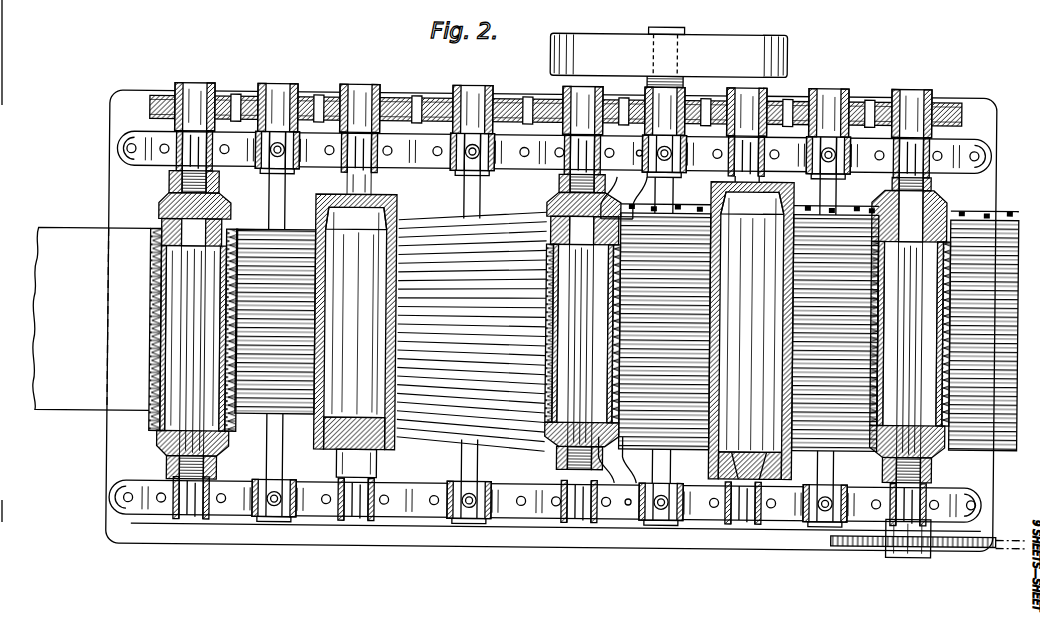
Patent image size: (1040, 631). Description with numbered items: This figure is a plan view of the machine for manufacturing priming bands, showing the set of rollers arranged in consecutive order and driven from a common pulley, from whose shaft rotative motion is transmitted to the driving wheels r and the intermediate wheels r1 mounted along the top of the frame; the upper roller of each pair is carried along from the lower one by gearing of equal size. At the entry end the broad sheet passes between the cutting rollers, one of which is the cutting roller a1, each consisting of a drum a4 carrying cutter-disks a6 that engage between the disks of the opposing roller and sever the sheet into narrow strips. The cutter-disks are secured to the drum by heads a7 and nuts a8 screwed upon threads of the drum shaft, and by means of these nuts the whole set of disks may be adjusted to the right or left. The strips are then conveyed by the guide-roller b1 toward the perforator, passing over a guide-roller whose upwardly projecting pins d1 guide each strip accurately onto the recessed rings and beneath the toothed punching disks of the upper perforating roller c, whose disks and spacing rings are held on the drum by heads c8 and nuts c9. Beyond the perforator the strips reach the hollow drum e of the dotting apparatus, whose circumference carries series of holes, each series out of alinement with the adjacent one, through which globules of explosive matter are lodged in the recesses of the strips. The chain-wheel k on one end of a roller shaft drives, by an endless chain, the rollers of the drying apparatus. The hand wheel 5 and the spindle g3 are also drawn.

The driving wheels r is at (176, 98).
The intermediate wheels r1 is at (300, 103).
The hand wheel 5 is at (788, 50).
The nuts a8 is at (222, 469).
The heads a7 is at (226, 204).
The cutting roller a1 is at (166, 224).
The cutter-disks a6 is at (152, 302).
The drum a4 is at (152, 383).
The guide-roller b1 is at (355, 325).
The heads c8 is at (530, 447).
The nuts c9 is at (560, 460).
The upper perforating roller c is at (583, 331).
The pins d1 is at (622, 330).
The hollow drum e is at (751, 328).
The threaded spindle g3 is at (910, 367).
The chain-wheel k is at (988, 530).